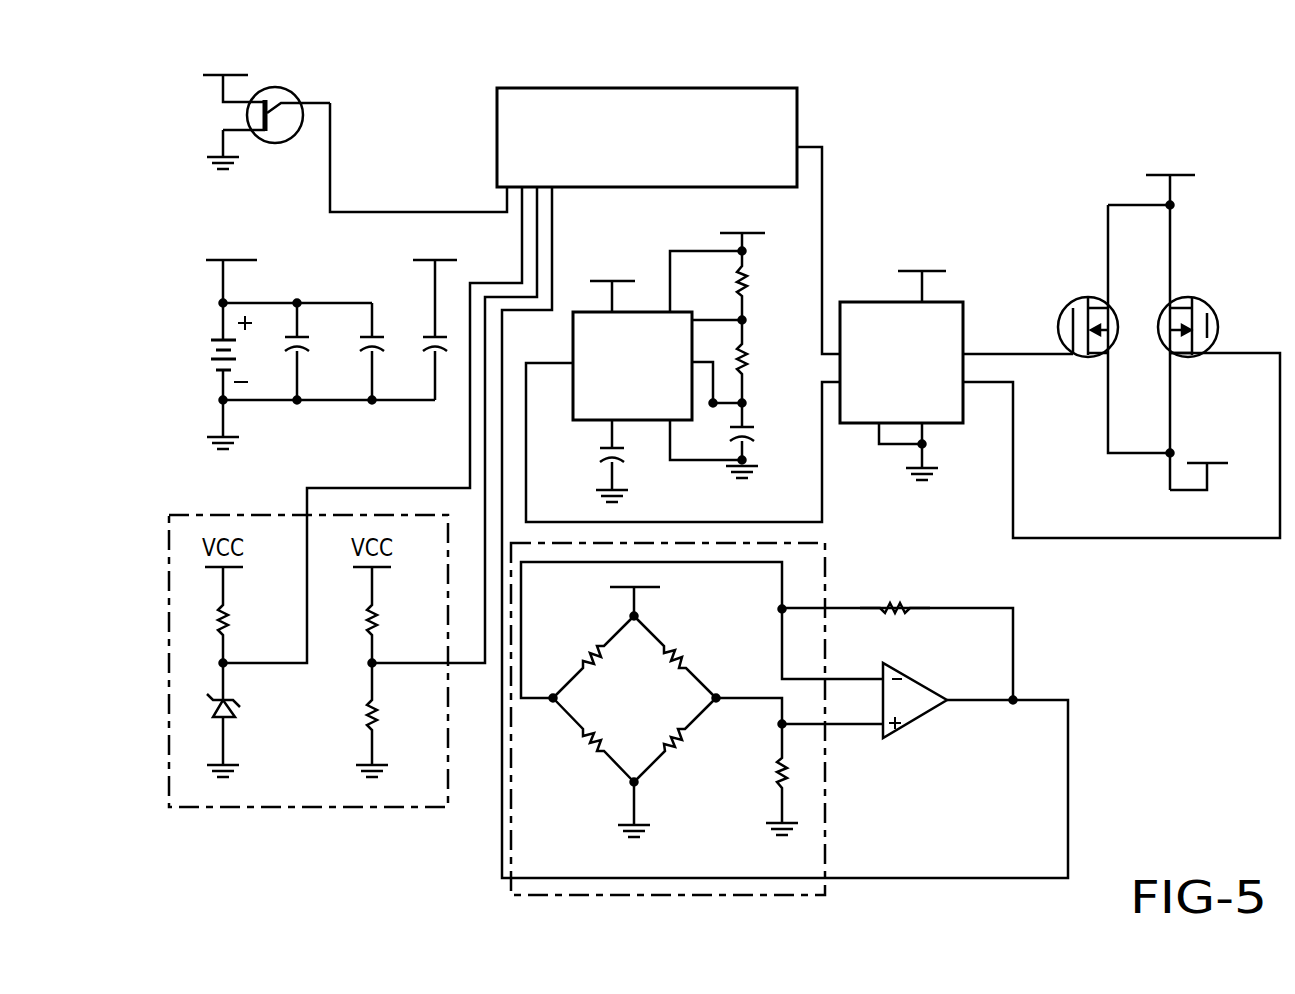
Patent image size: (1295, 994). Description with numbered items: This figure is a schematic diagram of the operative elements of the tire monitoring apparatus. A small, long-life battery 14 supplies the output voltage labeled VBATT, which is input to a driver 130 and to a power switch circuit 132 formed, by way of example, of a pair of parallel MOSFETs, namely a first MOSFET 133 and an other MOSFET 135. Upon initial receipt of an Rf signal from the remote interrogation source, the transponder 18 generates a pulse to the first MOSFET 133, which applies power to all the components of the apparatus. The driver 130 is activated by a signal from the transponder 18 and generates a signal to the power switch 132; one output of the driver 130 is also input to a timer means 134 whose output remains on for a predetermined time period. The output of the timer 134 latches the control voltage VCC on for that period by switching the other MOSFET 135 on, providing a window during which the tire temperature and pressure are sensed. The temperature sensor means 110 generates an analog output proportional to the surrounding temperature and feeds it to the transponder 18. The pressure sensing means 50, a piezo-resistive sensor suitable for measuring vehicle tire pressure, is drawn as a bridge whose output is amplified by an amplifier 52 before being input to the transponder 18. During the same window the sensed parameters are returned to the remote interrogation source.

The temperature sensor means 110 is at (284, 92).
The transponder 18 is at (655, 178).
The battery 14 is at (205, 347).
The timer means 134 is at (641, 408).
The driver 130 is at (923, 408).
The power switch circuit 132 is at (1143, 301).
The first MOSFET 133 is at (1063, 305).
The other MOSFET 135 is at (1201, 298).
The pressure sensing means 50 is at (540, 814).
The amplifier 52 is at (916, 716).